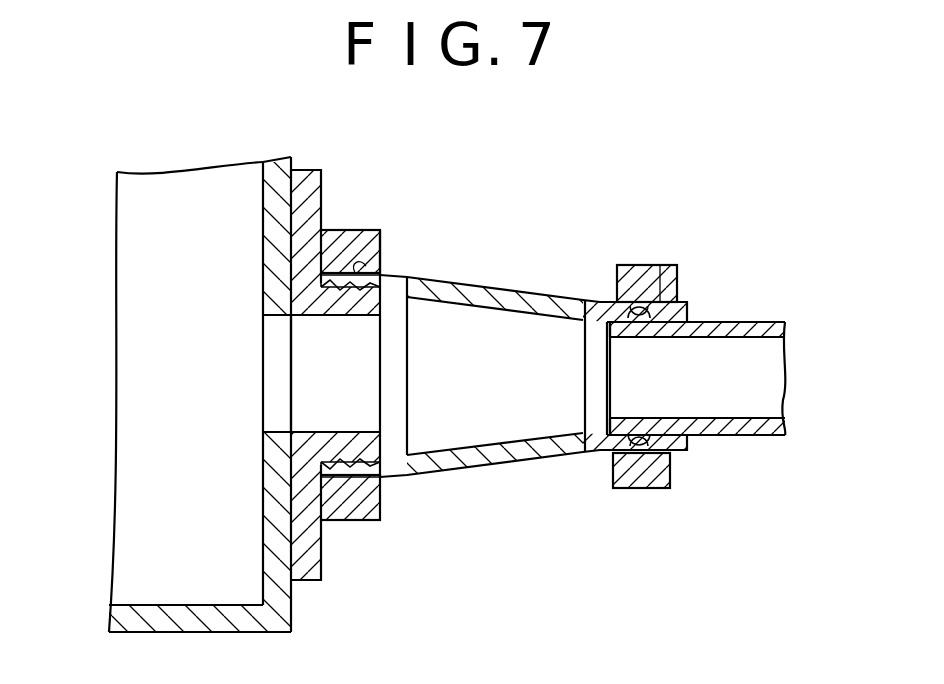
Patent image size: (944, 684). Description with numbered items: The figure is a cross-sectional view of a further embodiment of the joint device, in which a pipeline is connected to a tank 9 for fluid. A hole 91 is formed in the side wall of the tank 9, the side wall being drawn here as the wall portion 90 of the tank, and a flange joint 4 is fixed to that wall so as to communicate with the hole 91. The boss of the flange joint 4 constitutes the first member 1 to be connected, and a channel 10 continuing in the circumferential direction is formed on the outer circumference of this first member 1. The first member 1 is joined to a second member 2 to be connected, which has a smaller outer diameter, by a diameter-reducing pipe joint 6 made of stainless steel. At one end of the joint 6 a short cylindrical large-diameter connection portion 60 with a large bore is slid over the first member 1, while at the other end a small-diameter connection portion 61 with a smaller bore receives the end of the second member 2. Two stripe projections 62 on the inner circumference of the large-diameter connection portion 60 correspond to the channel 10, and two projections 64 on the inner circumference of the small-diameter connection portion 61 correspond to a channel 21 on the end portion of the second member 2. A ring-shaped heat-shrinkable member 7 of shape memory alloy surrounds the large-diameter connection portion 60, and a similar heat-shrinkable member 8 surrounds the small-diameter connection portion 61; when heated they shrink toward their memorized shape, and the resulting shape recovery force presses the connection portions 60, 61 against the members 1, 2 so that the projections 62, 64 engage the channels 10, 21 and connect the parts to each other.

The first member to be connected 1 is at (362, 318).
The second member to be connected 2 is at (753, 322).
The flange joint 4 is at (321, 183).
The diameter-reducing pipe joint 6 is at (527, 291).
The heat-shrinkable member 7 is at (350, 230).
The heat-shrinkable member 8 is at (642, 265).
The tank 9 is at (135, 440).
The channel 10 is at (383, 273).
The channel 21 is at (683, 325).
The large-diameter connection portion 60 is at (381, 243).
The small-diameter connection portion 61 is at (677, 277).
The stripe projections 62 is at (338, 317).
The projections 64 is at (636, 325).
The wall plate 90 is at (263, 220).
The hole 91 is at (268, 396).